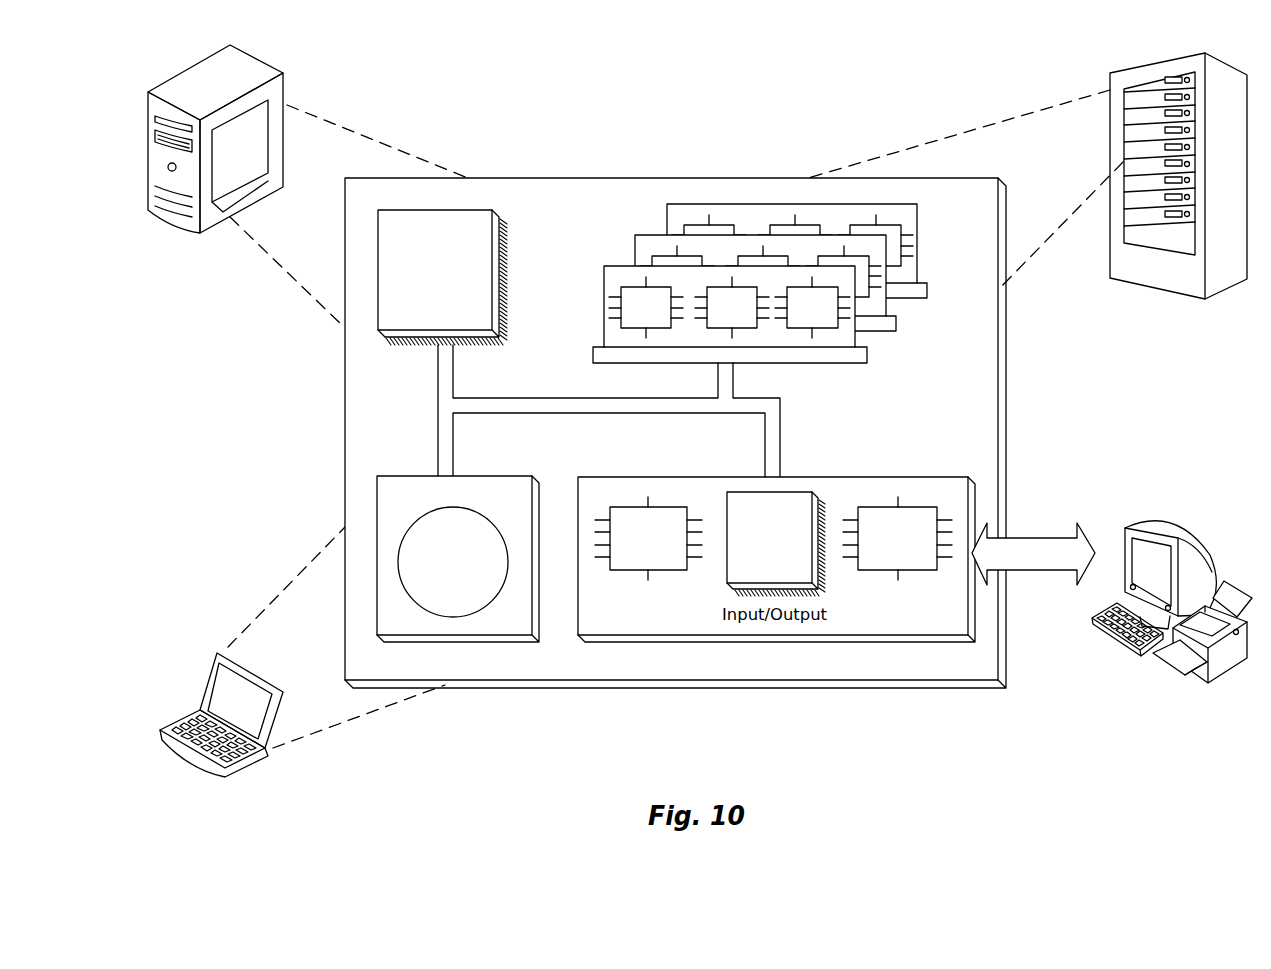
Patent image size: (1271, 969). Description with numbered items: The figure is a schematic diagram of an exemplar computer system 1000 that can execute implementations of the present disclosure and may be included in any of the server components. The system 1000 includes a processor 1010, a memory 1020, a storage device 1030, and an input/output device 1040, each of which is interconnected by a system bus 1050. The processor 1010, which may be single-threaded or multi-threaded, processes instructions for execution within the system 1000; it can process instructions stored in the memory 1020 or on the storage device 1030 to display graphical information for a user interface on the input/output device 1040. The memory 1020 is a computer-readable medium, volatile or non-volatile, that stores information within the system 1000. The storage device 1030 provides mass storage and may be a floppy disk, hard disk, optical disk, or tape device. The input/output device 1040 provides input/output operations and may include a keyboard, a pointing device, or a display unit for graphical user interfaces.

The computer system 1000 is at (516, 70).
The processor 1010 is at (487, 325).
The memory 1020 is at (921, 327).
The storage device 1030 is at (528, 623).
The input/output device 1040 is at (1122, 530).
The system bus 1050 is at (606, 414).